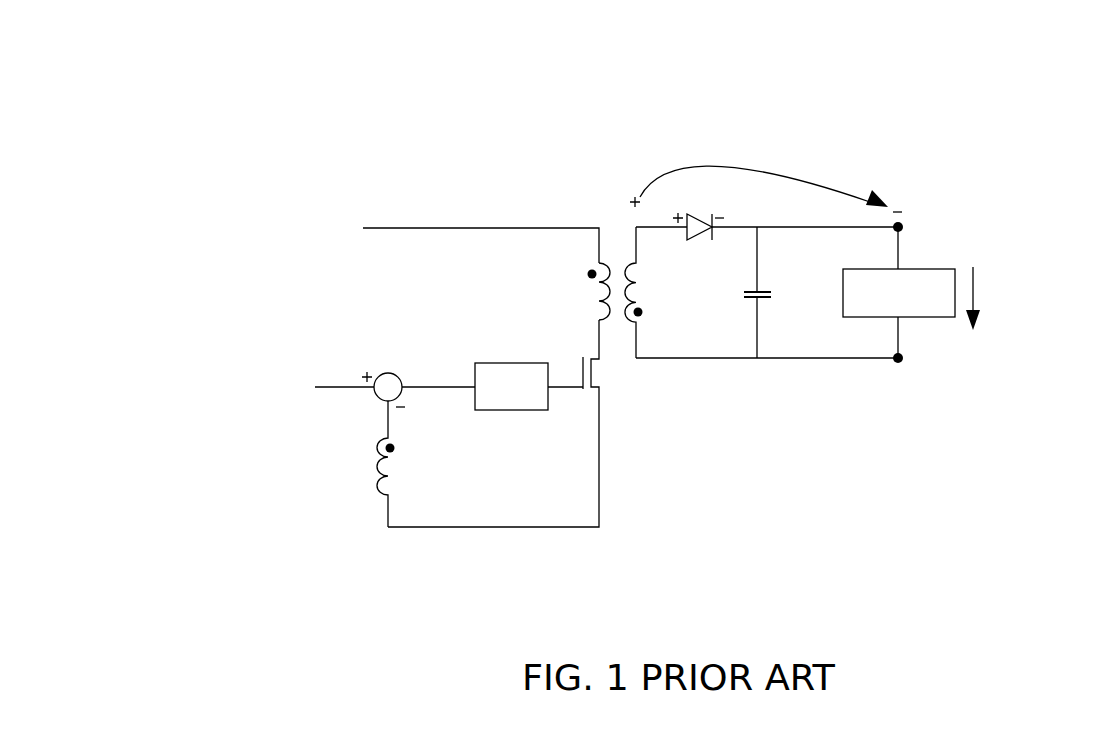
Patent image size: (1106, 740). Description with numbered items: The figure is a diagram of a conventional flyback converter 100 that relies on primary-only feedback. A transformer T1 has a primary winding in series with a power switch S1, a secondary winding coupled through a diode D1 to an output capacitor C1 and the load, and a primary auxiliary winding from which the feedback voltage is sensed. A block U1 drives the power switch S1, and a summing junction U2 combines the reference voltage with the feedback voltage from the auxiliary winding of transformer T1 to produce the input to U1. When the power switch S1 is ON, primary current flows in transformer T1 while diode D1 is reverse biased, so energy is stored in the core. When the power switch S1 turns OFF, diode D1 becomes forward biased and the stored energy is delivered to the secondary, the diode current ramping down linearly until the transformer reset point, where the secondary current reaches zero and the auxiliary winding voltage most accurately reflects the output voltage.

The flyback converter 100 is at (270, 84).
The transformer T1 is at (510, 377).
The power switch S1 is at (520, 423).
The controller U1 is at (511, 386).
The summing junction / error amplifier U2 is at (418, 377).
The diode D1 is at (767, 227).
The output capacitor C1 is at (777, 292).